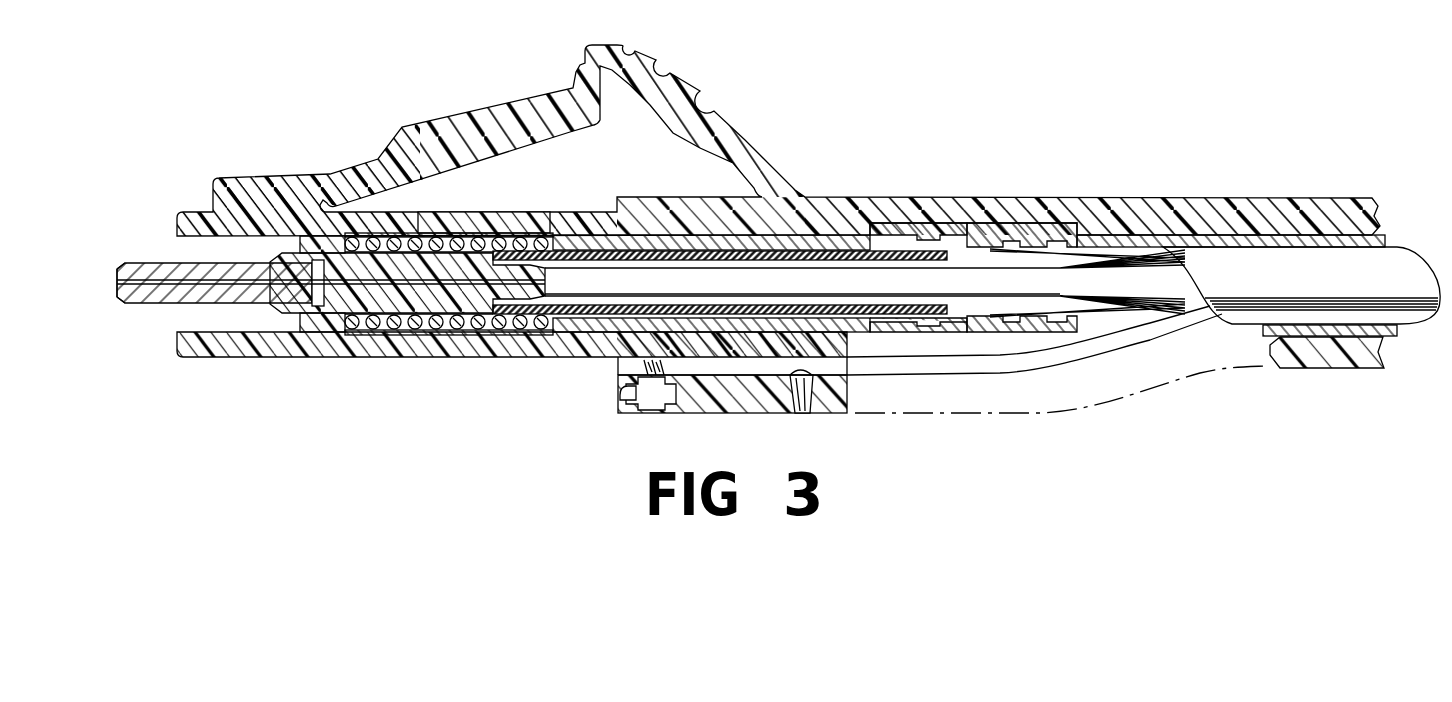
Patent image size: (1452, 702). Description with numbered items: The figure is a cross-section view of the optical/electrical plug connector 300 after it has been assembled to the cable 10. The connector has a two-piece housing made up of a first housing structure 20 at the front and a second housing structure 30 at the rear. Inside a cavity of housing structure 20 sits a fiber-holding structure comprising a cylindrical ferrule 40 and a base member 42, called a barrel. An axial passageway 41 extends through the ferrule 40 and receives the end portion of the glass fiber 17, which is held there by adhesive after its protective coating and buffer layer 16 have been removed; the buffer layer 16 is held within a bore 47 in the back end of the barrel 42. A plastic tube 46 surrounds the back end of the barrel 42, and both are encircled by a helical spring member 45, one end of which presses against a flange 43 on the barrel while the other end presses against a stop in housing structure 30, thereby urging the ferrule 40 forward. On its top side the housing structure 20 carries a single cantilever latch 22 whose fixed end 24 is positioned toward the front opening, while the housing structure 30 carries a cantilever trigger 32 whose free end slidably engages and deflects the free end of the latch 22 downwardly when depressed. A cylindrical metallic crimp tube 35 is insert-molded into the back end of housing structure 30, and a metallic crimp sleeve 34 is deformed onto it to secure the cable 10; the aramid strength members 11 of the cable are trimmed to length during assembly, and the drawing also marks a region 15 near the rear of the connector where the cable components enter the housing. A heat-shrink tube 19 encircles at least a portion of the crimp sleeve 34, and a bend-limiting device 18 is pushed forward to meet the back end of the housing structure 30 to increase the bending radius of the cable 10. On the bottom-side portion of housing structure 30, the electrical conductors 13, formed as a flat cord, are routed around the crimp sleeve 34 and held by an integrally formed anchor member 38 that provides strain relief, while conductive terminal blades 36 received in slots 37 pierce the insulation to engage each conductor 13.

The optical/electrical plug connector 300 is at (385, 48).
The cable 10 is at (1345, 256).
The aramid strength members 11 is at (1095, 316).
The electrical conductors 13 is at (1052, 355).
The buffered fiber region 15 is at (1164, 295).
The buffer layer 16 is at (465, 345).
The glass fiber 17 is at (125, 283).
The bend-limiting device 18 is at (1212, 208).
The heat-shrink tube 19 is at (1282, 236).
The first housing structure 20 is at (228, 176).
The cantilever latch 22 is at (521, 112).
The fixed end 24 is at (300, 176).
The second housing structure 30 is at (774, 158).
The cantilever trigger 32 is at (688, 95).
The metallic crimp sleeve 34 is at (975, 224).
The crimp tube 35 is at (898, 225).
The conductive terminal blades 36 is at (660, 404).
The slots 37 is at (626, 398).
The anchor member 38 is at (808, 385).
The ferrule 40 is at (162, 302).
The axial passageway 41 is at (165, 270).
The base member 42 is at (302, 332).
The flange 43 is at (360, 335).
The helical spring member 45 is at (412, 336).
The plastic tube 46 is at (806, 252).
The bore 47 is at (433, 242).